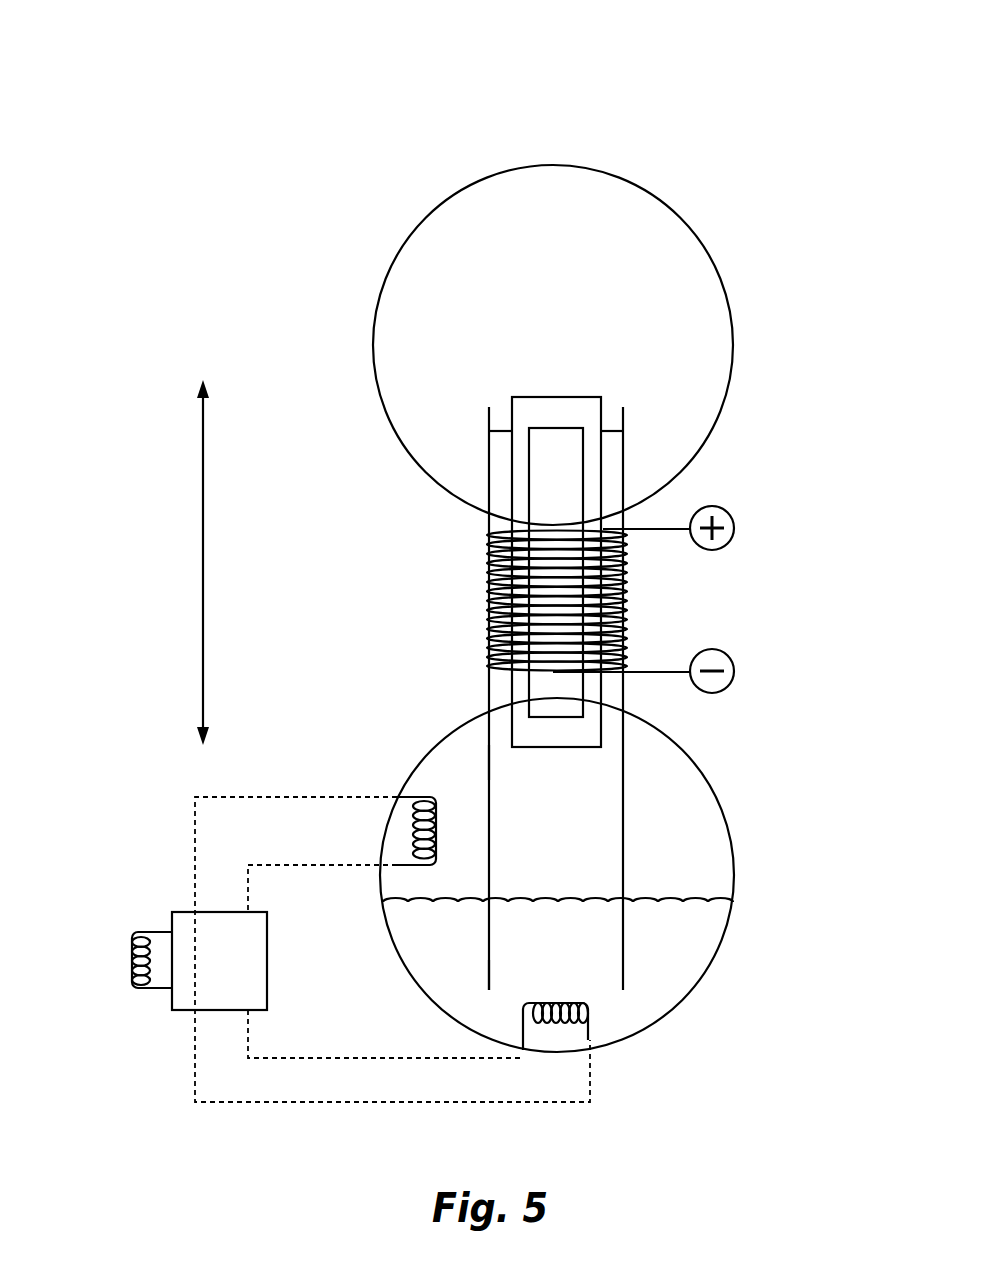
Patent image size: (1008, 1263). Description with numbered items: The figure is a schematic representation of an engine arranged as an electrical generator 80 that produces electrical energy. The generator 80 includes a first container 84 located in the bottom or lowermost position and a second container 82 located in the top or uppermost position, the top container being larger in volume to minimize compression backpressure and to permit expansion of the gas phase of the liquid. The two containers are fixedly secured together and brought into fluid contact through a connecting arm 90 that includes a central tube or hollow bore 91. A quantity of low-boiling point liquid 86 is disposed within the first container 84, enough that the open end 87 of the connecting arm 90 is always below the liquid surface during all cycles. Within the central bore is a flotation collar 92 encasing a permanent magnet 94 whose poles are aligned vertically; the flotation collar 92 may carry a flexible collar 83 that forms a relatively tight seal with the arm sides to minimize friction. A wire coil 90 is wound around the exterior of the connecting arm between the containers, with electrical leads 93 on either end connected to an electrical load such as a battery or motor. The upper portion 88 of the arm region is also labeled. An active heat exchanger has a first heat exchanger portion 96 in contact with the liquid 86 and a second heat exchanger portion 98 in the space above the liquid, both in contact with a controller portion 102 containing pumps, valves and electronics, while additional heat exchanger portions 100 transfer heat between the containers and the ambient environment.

The electrical generator 80 is at (300, 168).
The second container 82 is at (725, 292).
The flexible collar 83 is at (503, 428).
The first container 84 is at (693, 992).
The low-boiling point liquid 86 is at (692, 940).
The open end 87 is at (488, 975).
The upper portion of tube 88 is at (490, 763).
The connecting arm 90 is at (487, 571).
The central tube 91 is at (608, 787).
The flotation collar 92 is at (551, 397).
The electrical leads 93 is at (734, 520).
The permanent magnet 94 is at (568, 452).
The first heat exchanger portion 96 is at (583, 1017).
The second heat exchanger portion 98 is at (437, 800).
The additional heat exchanger portions 100 is at (130, 962).
The controller portion 102 is at (250, 943).